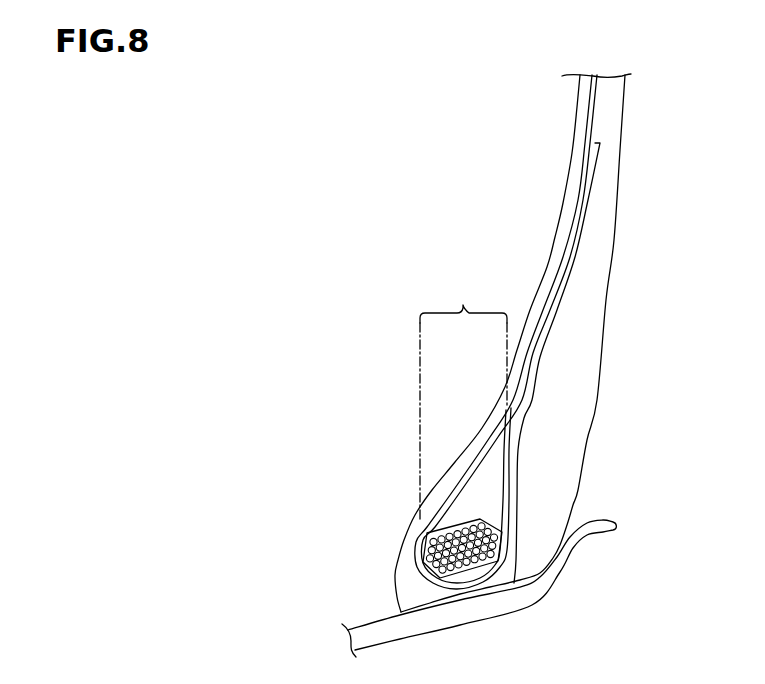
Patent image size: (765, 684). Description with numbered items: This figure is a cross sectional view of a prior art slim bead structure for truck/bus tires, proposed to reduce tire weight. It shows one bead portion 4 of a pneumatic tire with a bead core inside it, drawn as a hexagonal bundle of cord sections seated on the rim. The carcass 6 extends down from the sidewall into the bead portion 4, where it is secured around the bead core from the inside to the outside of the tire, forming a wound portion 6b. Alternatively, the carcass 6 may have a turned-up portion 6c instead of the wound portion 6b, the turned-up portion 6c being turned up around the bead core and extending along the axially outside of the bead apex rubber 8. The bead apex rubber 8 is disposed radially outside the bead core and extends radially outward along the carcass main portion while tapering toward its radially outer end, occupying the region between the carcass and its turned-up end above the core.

The bead portion 4 is at (397, 518).
The carcass 6 is at (597, 106).
The wound portion 6b is at (448, 481).
The turned-up portion 6c is at (516, 463).
The bead apex rubber 8 is at (490, 487).